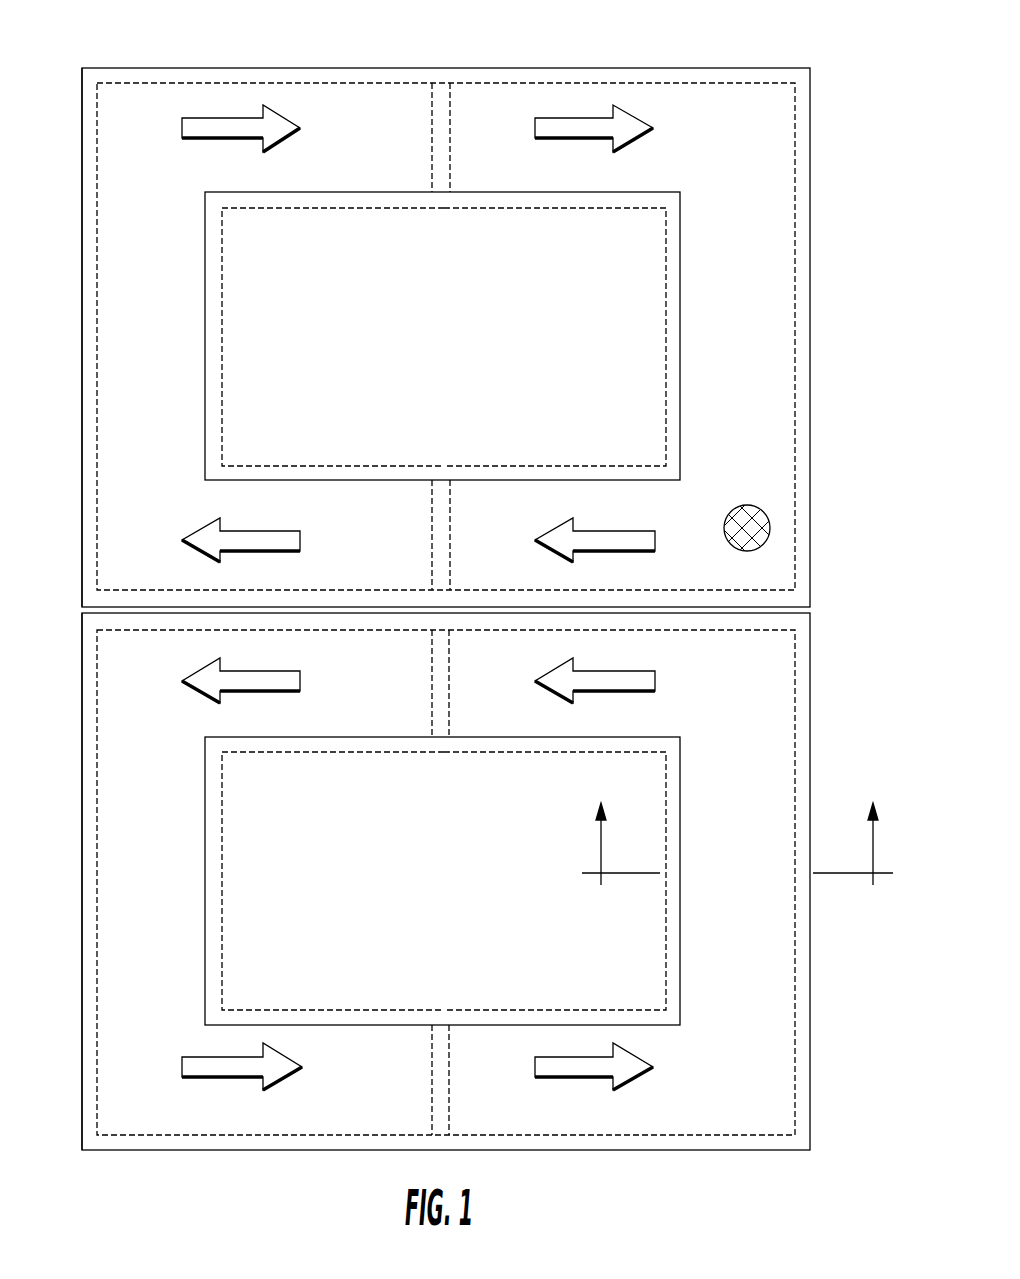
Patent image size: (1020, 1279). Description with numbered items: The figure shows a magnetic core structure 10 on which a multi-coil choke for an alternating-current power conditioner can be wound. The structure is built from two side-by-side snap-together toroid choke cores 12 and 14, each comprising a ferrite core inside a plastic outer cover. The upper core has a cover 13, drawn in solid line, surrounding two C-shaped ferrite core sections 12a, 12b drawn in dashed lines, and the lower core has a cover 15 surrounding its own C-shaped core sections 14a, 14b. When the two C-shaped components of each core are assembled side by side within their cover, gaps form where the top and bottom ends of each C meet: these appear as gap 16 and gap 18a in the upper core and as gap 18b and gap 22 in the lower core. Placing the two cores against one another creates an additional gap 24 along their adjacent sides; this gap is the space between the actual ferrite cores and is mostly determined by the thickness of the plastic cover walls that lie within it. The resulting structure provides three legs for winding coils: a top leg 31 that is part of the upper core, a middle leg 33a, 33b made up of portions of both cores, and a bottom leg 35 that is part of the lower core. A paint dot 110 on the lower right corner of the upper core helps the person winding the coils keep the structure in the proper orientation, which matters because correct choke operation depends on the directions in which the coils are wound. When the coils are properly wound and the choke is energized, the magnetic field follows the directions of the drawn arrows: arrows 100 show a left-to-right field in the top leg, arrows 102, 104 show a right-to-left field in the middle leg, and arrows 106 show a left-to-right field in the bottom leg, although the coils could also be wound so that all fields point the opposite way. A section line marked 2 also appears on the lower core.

The magnetic core structure 10 is at (842, 80).
The core 12 is at (777, 298).
The core section 12a is at (222, 333).
The core section 12b is at (660, 343).
The cover 13 is at (82, 302).
The core 14 is at (775, 735).
The core section 14a is at (222, 877).
The core section 14b is at (660, 990).
The cover 15 is at (82, 750).
The gap 16 is at (440, 208).
The gap 18a is at (440, 467).
The gap 18b is at (440, 752).
The gap 22 is at (440, 1015).
The gap 24 is at (785, 596).
The top leg 31 is at (390, 153).
The middle leg 33a is at (400, 567).
The middle leg 33b is at (400, 695).
The bottom leg 35 is at (396, 1093).
The arrows 100 is at (232, 118).
The arrows 102 is at (225, 528).
The arrows 104 is at (225, 669).
The arrows 106 is at (228, 1057).
The dot 110 is at (747, 505).
The section line 2- 2 is at (737, 847).